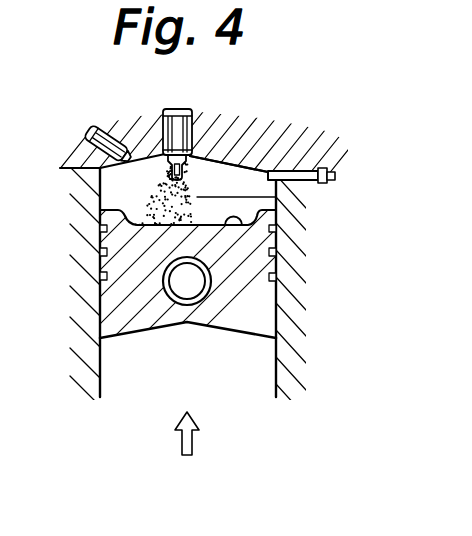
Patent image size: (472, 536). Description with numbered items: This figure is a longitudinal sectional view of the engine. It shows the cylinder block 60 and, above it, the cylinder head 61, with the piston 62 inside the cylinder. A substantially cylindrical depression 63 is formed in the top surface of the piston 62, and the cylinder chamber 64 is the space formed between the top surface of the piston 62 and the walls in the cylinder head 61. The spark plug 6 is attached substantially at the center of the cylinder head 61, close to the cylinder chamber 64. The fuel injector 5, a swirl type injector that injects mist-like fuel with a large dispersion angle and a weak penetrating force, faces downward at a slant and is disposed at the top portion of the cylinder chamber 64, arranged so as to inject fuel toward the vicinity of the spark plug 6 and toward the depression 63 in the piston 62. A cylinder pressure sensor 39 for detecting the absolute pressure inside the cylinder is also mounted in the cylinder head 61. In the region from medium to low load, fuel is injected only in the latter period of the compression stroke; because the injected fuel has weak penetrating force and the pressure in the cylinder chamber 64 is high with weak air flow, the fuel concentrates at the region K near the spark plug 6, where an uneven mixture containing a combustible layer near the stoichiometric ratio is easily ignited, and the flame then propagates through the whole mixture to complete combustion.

The fuel injector 5 is at (103, 125).
The spark plug 6 is at (192, 121).
The cylinder head 61 is at (219, 146).
The cylinder chamber 64 is at (243, 180).
The cylinder pressure sensor 39 is at (303, 170).
The region near the spark plug K is at (276, 197).
The cylinder block 60 is at (288, 312).
The piston 62 is at (143, 308).
The depression 63 is at (241, 225).